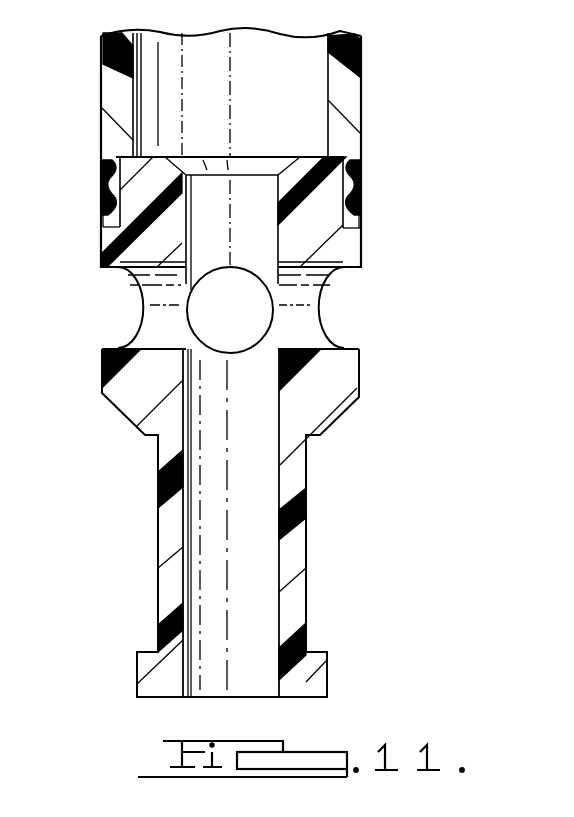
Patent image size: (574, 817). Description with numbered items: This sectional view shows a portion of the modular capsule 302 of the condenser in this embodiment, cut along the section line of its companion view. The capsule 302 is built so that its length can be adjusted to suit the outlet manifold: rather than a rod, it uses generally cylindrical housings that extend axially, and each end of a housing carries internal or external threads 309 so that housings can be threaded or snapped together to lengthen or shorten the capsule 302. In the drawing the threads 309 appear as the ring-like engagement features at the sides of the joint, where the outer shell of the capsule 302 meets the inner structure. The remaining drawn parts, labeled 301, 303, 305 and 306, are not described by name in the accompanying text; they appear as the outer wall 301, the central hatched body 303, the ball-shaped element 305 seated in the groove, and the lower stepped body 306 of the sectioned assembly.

The inner tube 301 is at (101, 72).
The capsule 302 is at (374, 92).
The nut 303 is at (101, 258).
The ball 305 is at (279, 305).
The lower body 306 is at (346, 428).
The threads 309 is at (344, 165).